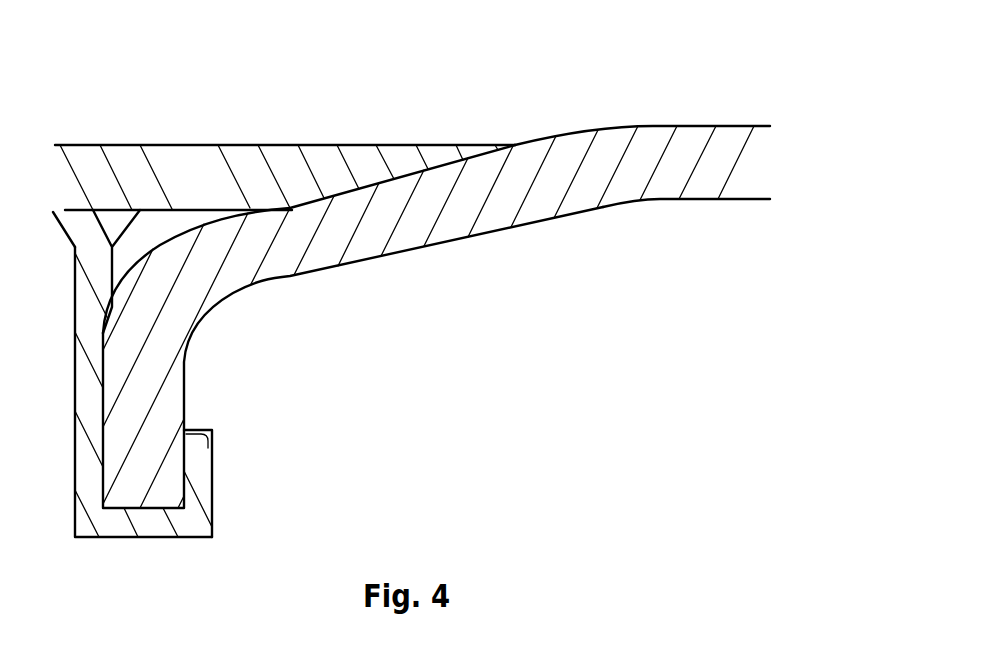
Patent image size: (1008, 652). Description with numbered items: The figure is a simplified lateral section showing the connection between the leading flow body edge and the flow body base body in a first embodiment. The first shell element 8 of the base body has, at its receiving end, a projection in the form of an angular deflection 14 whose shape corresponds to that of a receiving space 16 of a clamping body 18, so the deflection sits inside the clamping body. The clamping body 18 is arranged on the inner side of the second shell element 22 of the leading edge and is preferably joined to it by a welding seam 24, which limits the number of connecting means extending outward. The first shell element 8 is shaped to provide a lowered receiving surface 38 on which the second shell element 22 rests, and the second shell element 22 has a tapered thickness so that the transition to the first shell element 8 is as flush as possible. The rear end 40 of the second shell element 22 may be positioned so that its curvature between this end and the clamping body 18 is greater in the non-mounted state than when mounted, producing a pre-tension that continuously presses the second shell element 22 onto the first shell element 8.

The first shell element 8 is at (652, 143).
The angular deflection 14 is at (152, 346).
The receiving space 16 is at (184, 462).
The clamping body 18 is at (152, 522).
The second shell element 22 is at (176, 182).
The welding seam 24 is at (118, 226).
The lowered receiving surface 38 is at (367, 167).
The rear end 40 is at (481, 132).